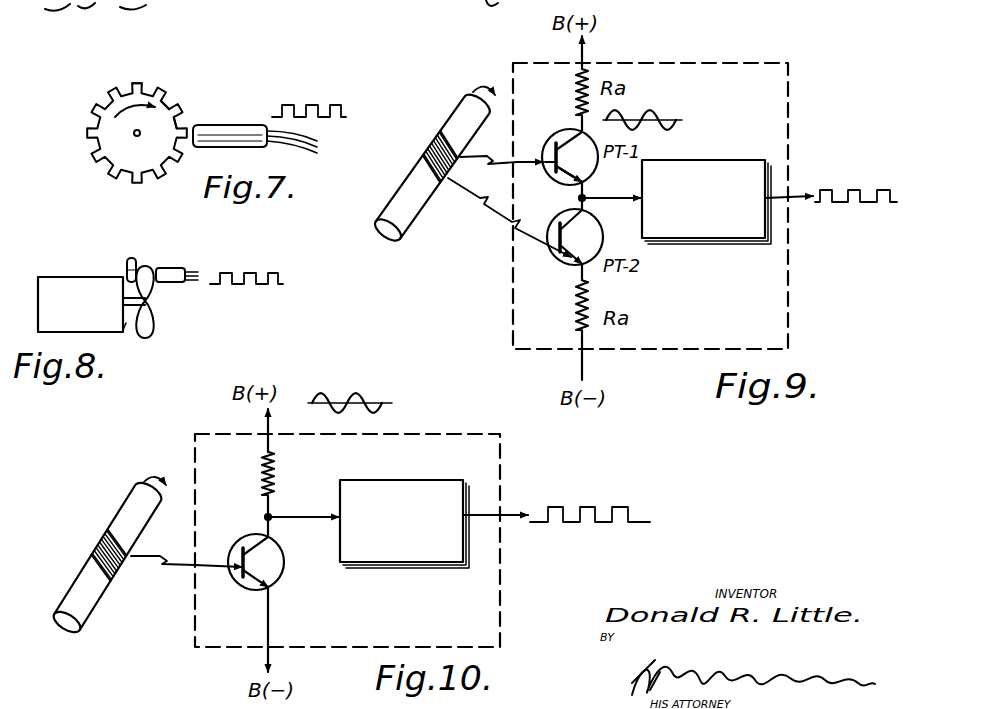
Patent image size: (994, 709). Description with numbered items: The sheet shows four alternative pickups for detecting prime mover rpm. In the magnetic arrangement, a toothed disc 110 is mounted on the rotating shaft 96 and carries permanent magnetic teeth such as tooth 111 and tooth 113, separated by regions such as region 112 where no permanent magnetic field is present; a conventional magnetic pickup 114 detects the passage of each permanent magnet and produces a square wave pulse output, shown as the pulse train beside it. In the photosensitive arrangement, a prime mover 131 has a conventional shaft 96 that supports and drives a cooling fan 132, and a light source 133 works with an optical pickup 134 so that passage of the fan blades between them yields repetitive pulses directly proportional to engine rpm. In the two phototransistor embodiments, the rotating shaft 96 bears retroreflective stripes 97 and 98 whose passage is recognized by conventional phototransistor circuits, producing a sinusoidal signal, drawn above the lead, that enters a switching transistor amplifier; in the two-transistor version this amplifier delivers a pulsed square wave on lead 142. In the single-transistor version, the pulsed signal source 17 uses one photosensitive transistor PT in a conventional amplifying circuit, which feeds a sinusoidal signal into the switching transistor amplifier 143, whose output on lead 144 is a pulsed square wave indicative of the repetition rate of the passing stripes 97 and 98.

In FIG. 9, the pulsed signal source 17 is at (762, 63).
In FIG. 10, the pulsed signal source 17 is at (480, 434).
In FIG. 7, the rotating shaft 96 is at (138, 136).
In FIG. 8, the rotating shaft 96 is at (126, 323).
In FIG. 9, the rotating shaft 96 is at (466, 108).
In FIG. 10, the rotating shaft 96 is at (132, 494).
In FIG. 9, the retroreflective stripe 97 is at (436, 115).
In FIG. 10, the retroreflective stripe 97 is at (98, 545).
In FIG. 9, the retroreflective stripe 98 is at (442, 188).
In FIG. 10, the retroreflective stripe 98 is at (84, 572).
In FIG. 7, the toothed disc 110 is at (104, 109).
In FIG. 7, the permanent magnetic tooth 111 is at (137, 83).
In FIG. 7, the region without permanent magnetic field 112 is at (167, 96).
In FIG. 7, the permanent magnetic tooth 113 is at (181, 106).
In FIG. 7, the magnetic pickup 114 is at (240, 127).
In FIG. 8, the prime mover 131 is at (50, 277).
In FIG. 8, the cooling fan 132 is at (148, 325).
In FIG. 8, the light source 133 is at (131, 258).
In FIG. 8, the optical pickup 134 is at (171, 268).
In FIG. 9, the lead 142 is at (799, 190).
In FIG. 10, the switching transistor amplifier 143 is at (414, 562).
In FIG. 10, the lead 144 is at (513, 507).
In FIG. 10, the photosensitive transistor PT is at (270, 563).